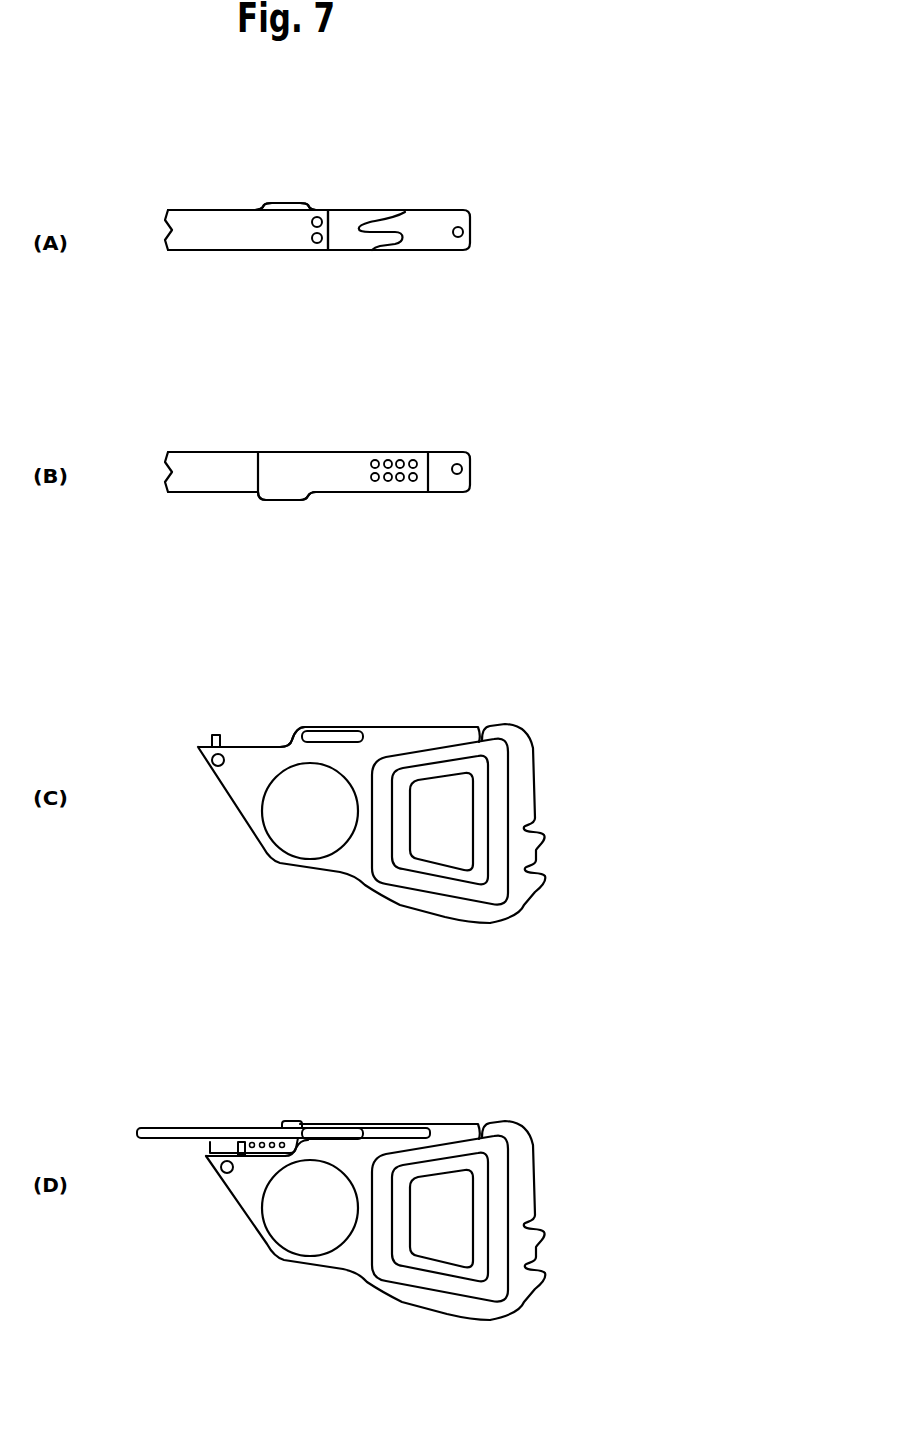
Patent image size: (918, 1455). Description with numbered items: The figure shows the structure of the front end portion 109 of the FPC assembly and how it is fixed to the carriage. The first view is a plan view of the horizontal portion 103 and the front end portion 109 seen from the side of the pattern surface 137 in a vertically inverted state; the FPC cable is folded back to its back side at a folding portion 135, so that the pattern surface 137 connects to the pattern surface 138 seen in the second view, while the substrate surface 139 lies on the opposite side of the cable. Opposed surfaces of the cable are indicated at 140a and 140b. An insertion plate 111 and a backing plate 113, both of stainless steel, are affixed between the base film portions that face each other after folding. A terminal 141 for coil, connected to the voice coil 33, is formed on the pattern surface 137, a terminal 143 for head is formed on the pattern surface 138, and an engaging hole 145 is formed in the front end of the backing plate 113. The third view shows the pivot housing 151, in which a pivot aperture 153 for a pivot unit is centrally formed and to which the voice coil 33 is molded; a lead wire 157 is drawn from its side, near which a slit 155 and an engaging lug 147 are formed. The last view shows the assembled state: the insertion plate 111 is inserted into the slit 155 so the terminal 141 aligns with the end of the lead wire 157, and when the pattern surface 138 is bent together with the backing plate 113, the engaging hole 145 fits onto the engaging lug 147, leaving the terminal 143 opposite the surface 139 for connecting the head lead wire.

The horizontal portion 103 is at (171, 178).
The front end portion 109 is at (379, 177).
The insertion plate 111 is at (387, 214).
The backing plate 113 is at (455, 218).
The folding portion 135 is at (287, 203).
The pattern surface 137 is at (258, 227).
The pattern surface 138 is at (317, 466).
The substrate surface 139 is at (243, 483).
The upper surface 140a is at (200, 209).
The lower surface 140b is at (208, 252).
The terminal for coil 141 is at (301, 233).
The terminal for head 143 is at (386, 448).
The engaging hole 145 is at (460, 468).
The engaging lug 147 is at (213, 736).
The pivot housing 151 is at (403, 722).
The pivot aperture 153 is at (292, 819).
The slit 155 is at (300, 731).
The lead wire 157 is at (297, 713).
The voice coil 33 is at (482, 723).